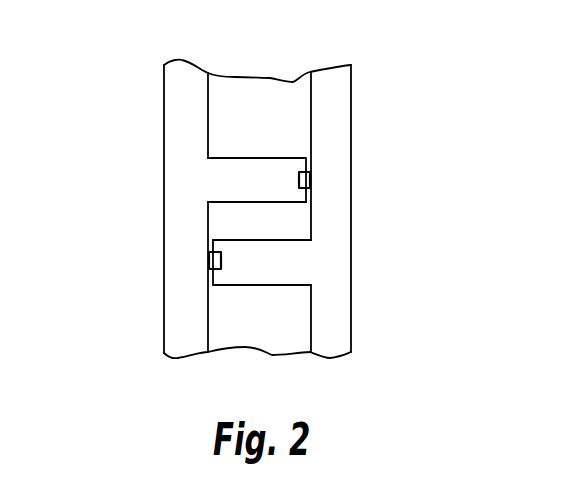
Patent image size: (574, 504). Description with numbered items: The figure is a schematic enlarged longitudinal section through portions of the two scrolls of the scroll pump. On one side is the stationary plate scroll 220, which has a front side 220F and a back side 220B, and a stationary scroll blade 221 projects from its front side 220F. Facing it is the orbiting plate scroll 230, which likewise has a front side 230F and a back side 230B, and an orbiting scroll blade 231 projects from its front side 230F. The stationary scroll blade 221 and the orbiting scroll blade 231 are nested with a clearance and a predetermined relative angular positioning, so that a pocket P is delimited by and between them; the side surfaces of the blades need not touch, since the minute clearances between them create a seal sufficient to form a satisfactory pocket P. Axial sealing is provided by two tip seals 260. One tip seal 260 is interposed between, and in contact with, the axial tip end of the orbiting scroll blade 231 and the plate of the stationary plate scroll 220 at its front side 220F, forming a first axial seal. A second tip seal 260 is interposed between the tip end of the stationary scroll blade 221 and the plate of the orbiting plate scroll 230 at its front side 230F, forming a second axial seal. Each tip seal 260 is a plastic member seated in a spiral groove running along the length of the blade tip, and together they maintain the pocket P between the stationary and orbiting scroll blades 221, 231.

The stationary plate scroll 220 is at (135, 209).
The back side of stationary plate scroll 220B is at (164, 138).
The front side of stationary plate scroll 220F is at (207, 328).
The stationary scroll blade 221 is at (230, 181).
The orbiting plate scroll 230 is at (343, 176).
The back side of orbiting plate scroll 230B is at (351, 105).
The front side of orbiting plate scroll 230F is at (310, 104).
The orbiting scroll blade 231 is at (278, 265).
The tip seal 260 is at (311, 181).
The pocket P is at (292, 225).